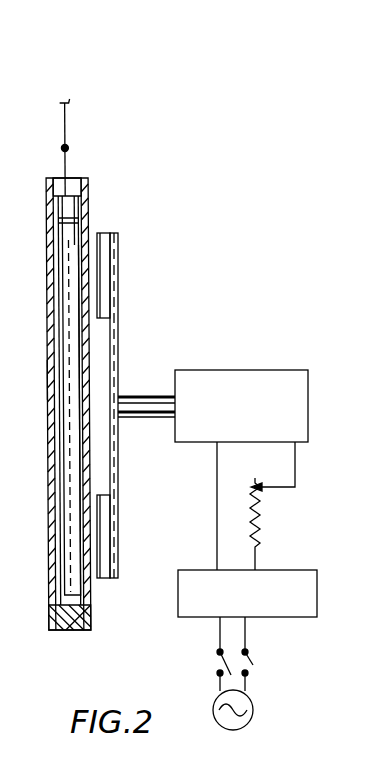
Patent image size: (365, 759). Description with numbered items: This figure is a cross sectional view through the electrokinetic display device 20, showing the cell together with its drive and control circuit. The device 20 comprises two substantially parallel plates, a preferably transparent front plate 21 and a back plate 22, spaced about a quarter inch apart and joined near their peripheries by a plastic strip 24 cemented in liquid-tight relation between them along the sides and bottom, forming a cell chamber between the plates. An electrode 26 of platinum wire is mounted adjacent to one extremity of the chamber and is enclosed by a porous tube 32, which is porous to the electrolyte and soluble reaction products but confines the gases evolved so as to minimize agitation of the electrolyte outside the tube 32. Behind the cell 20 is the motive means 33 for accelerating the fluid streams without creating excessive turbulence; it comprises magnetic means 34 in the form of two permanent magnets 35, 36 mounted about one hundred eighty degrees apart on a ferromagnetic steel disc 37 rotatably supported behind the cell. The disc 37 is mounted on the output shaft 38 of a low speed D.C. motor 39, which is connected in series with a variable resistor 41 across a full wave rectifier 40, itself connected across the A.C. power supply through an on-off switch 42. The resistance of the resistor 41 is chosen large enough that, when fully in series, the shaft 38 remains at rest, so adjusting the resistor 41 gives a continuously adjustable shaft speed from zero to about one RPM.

The electrokinetic display device 20 is at (158, 178).
The front plate 21 is at (49, 228).
The back plate 22 is at (79, 225).
The plastic strip 24 is at (2, 401).
The electrode 26 is at (66, 164).
The porous tube 32 is at (54, 283).
The motive means 33 is at (256, 294).
The magnetic means 34 is at (177, 316).
The permanent magnet 35 is at (97, 234).
The permanent magnet 36 is at (101, 582).
The disc 37 is at (118, 357).
The output shaft 38 is at (170, 396).
The motor 39 is at (239, 370).
The full wave rectifier 40 is at (277, 570).
The variable resistor 41 is at (262, 511).
The on-off switch 42 is at (251, 665).